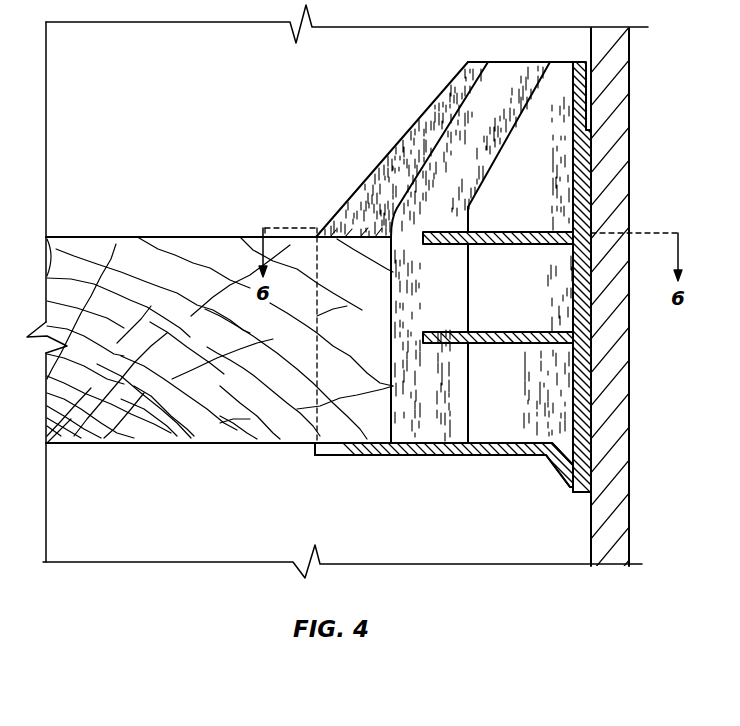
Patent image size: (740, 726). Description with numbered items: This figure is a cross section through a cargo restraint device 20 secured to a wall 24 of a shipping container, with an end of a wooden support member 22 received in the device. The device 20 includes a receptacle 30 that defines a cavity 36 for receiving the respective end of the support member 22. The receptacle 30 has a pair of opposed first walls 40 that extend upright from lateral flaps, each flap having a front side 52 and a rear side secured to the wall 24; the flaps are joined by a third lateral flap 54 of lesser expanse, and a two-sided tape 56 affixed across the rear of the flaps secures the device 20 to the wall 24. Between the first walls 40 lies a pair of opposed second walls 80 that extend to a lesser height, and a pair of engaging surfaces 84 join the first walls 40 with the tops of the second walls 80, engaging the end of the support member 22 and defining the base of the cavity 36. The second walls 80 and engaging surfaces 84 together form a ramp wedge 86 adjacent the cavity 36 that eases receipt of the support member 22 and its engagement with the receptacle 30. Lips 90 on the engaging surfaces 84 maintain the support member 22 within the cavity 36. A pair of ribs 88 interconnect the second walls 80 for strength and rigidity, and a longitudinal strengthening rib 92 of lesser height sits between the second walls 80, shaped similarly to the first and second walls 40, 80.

The cargo restraint device 20 is at (468, 468).
The support member 22 is at (102, 237).
The wall 24 is at (610, 84).
The receptacle 30 is at (427, 257).
The cavity 36 is at (333, 443).
The first wall 40 is at (532, 460).
The front side 52 is at (591, 192).
The third lateral flap 54 is at (570, 488).
The two-sided tape 56 is at (586, 333).
The second wall 80 is at (435, 298).
The engaging surface 84 is at (428, 158).
The ramp wedge 86 is at (466, 90).
The rib 88 is at (477, 330).
The lip 90 is at (393, 225).
The longitudinal strengthening rib 92 is at (493, 196).